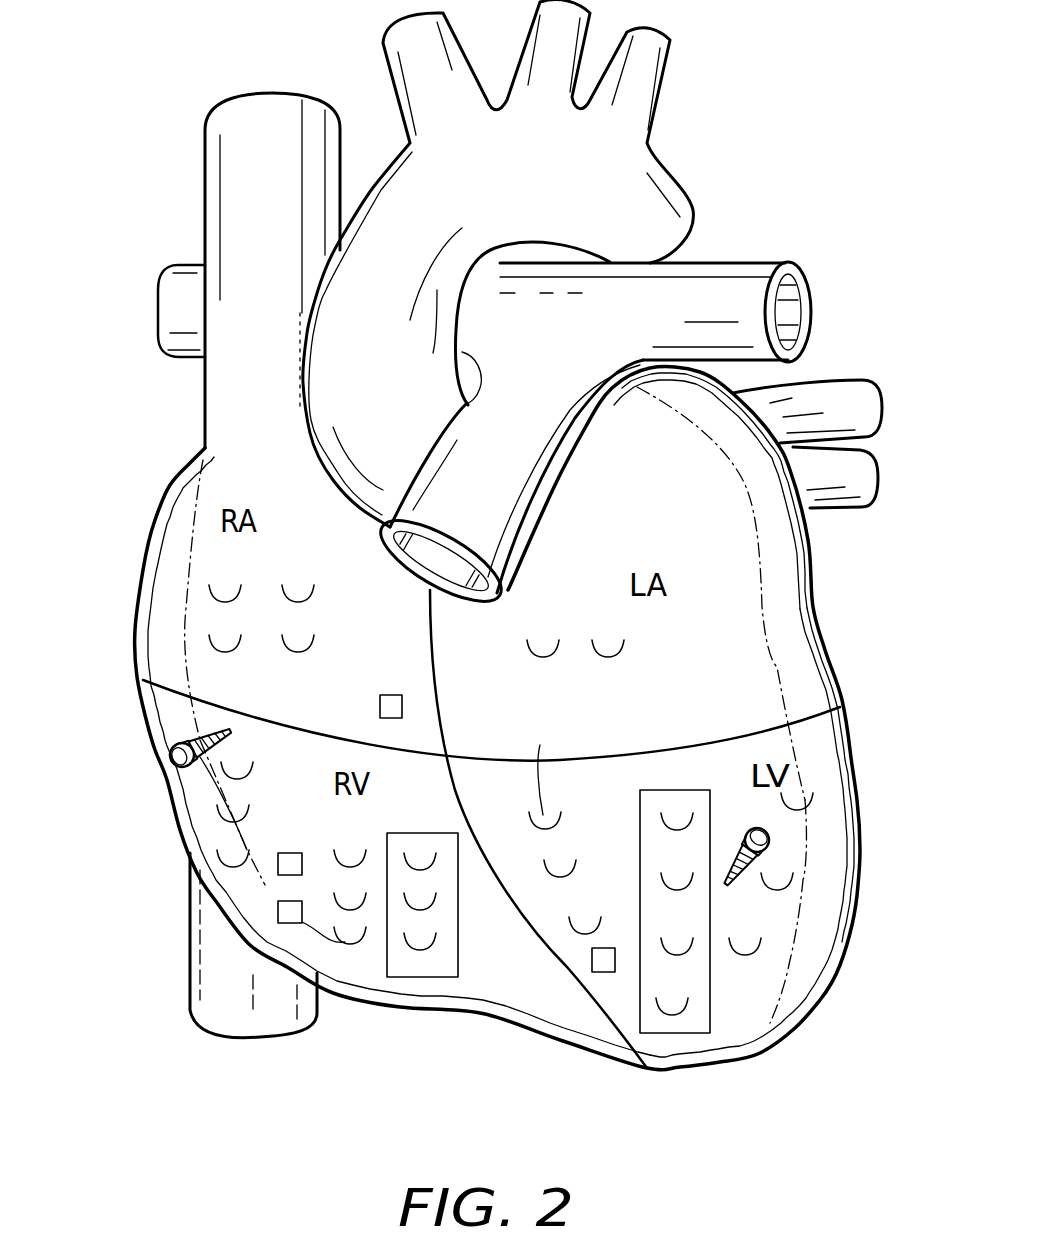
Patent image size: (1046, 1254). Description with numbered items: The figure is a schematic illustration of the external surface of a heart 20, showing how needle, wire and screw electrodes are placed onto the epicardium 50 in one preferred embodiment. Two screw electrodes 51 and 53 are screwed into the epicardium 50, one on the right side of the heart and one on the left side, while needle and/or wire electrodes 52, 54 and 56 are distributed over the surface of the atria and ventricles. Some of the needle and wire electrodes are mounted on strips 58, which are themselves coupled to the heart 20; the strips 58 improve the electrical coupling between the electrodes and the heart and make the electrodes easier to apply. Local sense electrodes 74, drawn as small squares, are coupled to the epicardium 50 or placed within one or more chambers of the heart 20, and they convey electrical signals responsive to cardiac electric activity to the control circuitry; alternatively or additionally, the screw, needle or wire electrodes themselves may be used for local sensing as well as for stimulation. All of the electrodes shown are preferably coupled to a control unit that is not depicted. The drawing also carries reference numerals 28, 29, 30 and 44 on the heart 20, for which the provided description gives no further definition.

The heart 20 is at (136, 420).
The right atrium wall 28 is at (173, 498).
The left atrium wall 29 is at (815, 583).
The right ventricle wall 30 is at (177, 810).
The left ventricle wall 44 is at (859, 897).
The epicardium 50 is at (175, 735).
The screw electrode 51 is at (172, 757).
The needle and/or wire electrode 52 is at (249, 807).
The screw electrode 53 is at (770, 832).
The needle and/or wire electrode 54 is at (557, 772).
The needle and/or wire electrode 56 is at (314, 590).
The strips 58 is at (624, 645).
The local sense electrodes 74 is at (391, 696).